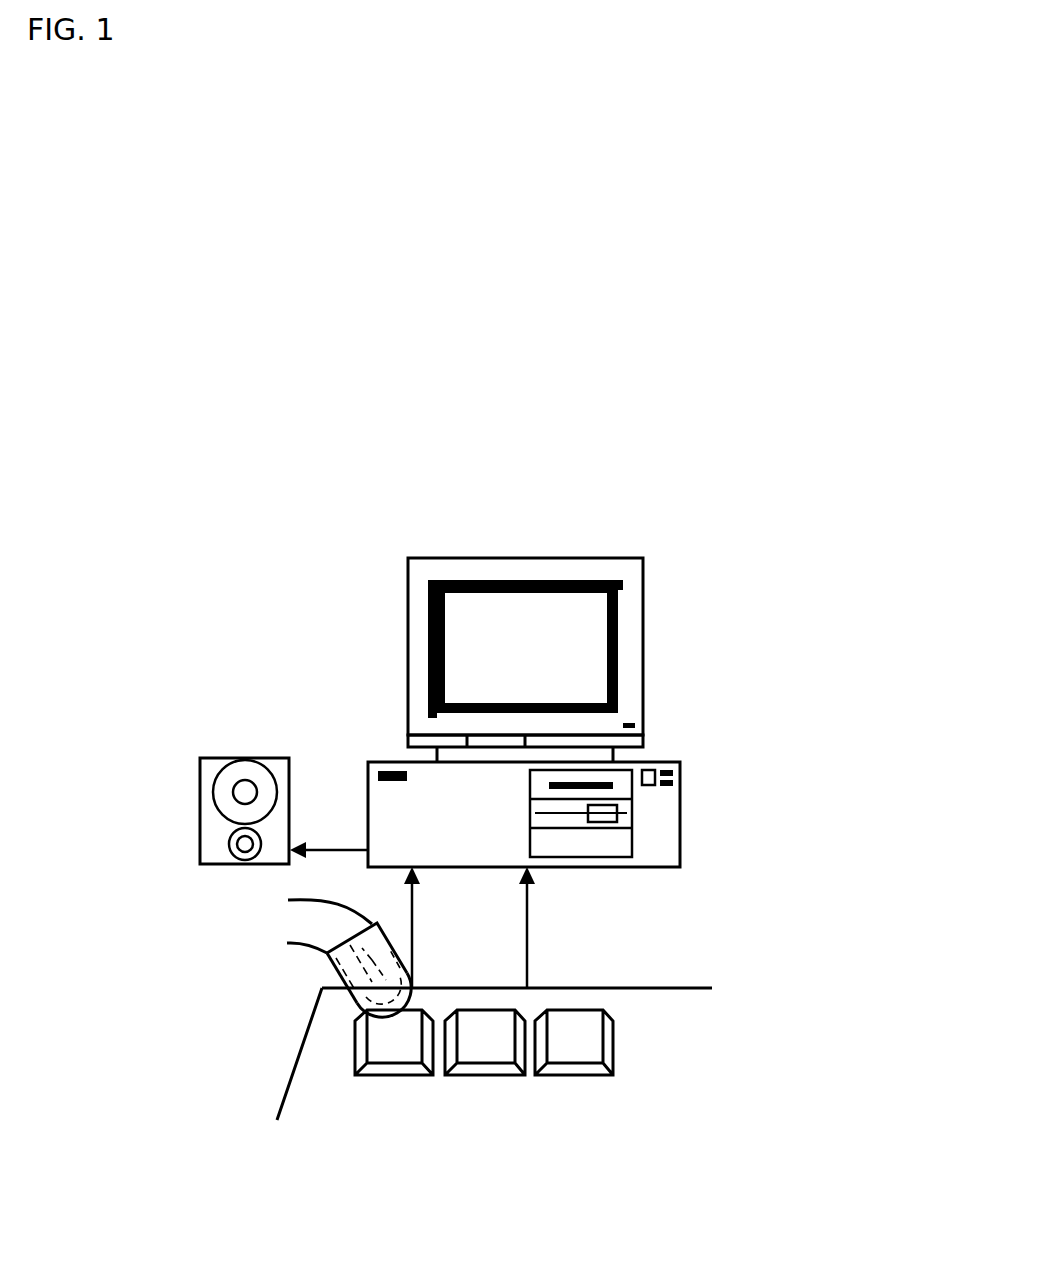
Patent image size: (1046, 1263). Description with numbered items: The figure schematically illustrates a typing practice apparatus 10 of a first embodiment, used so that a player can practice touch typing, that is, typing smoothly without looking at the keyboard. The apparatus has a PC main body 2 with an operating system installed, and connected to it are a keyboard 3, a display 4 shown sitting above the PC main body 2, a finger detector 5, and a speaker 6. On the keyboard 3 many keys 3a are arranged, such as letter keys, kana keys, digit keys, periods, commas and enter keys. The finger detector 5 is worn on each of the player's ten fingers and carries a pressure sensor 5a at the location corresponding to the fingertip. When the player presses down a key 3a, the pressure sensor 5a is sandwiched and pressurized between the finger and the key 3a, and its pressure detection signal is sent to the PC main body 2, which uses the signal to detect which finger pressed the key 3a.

The typing practice apparatus 10 is at (827, 483).
The PC main body 2 is at (681, 766).
The keyboard 3 is at (690, 995).
The keys 3a is at (390, 1063).
The display 4 is at (596, 558).
The finger detector 5 is at (317, 970).
The pressure sensor 5a is at (363, 1015).
The speaker 6 is at (222, 758).